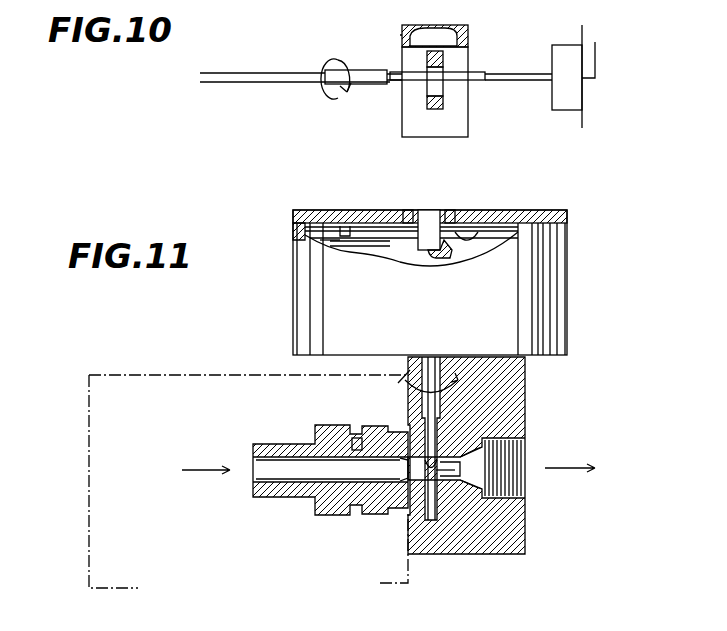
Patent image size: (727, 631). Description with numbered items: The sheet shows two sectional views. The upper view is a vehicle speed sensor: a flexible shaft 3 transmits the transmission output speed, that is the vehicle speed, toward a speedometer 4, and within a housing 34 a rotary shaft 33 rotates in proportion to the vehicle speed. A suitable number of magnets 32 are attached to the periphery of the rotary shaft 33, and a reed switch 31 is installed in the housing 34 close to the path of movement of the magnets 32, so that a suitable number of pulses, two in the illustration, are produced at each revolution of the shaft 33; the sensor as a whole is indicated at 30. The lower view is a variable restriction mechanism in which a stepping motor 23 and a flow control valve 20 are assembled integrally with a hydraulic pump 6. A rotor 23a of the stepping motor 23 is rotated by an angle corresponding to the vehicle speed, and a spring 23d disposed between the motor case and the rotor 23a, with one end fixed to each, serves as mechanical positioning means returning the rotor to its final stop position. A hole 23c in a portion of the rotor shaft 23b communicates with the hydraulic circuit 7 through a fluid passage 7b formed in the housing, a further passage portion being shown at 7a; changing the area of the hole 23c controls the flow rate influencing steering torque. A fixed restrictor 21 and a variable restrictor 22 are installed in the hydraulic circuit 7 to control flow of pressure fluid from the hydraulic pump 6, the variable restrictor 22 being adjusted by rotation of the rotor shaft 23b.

In FIG. 10, the flexible shaft 3 is at (258, 78).
In FIG. 10, the speedometer 4 is at (566, 55).
In FIG. 10, the housing 30 is at (398, 122).
In FIG. 10, the reed switch 31 is at (450, 30).
In FIG. 10, the magnets 32 is at (443, 108).
In FIG. 10, the rotary shaft 33 is at (460, 76).
In FIG. 10, the housing 34 is at (405, 27).
In FIG. 11, the hydraulic pump 6 is at (89, 528).
In FIG. 11, the pressure fluid feed line 7 is at (253, 470).
In FIG. 11, the passage portion 7a is at (448, 525).
In FIG. 11, the fluid passage 7b is at (400, 468).
In FIG. 11, the flow control valve 20 is at (508, 562).
In FIG. 11, the fixed restrictor 21 is at (470, 470).
In FIG. 11, the variable restrictor 22 is at (402, 510).
In FIG. 11, the stepping motor 23 is at (436, 305).
In FIG. 11, the rotor 23a is at (368, 240).
In FIG. 11, the rotor shaft 23b is at (432, 357).
In FIG. 11, the hole 23c is at (415, 398).
In FIG. 11, the spring 23d is at (478, 234).